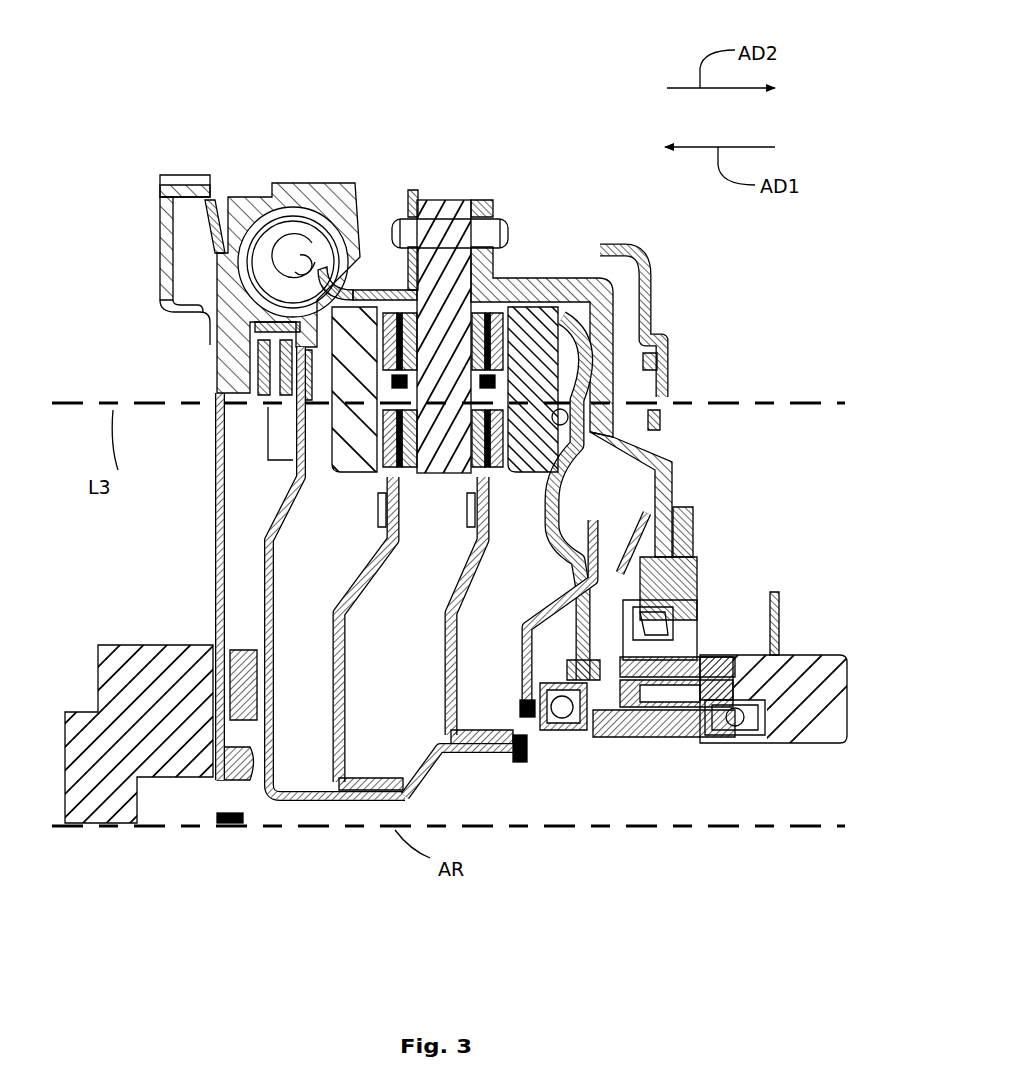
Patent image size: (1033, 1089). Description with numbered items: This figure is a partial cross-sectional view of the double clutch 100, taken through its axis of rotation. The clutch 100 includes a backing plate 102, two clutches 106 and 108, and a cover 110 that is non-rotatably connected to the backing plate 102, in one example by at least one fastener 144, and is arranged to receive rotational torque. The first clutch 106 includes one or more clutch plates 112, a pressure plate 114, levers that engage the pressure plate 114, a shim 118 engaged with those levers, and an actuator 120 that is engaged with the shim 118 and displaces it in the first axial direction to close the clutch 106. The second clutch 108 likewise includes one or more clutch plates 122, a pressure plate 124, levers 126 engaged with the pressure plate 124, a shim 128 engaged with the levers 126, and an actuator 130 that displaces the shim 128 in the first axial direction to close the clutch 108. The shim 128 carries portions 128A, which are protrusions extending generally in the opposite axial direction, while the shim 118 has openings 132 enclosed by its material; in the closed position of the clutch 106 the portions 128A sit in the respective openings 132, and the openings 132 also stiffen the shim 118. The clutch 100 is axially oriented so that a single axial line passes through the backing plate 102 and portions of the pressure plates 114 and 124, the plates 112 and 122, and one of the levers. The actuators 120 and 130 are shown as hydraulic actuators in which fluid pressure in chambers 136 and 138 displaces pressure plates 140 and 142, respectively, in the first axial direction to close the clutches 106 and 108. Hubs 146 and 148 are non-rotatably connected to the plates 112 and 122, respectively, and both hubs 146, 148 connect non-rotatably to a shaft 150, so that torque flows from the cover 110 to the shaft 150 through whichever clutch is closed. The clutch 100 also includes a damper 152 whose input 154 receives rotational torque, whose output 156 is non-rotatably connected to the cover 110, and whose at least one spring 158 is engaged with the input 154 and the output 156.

The double clutch 100 is at (136, 80).
The backing plate 102 is at (453, 200).
The clutch 106 is at (318, 441).
The clutch 108 is at (530, 272).
The cover 110 is at (547, 290).
The clutch plate 112 is at (407, 480).
The pressure plate 114 is at (340, 475).
The shim 118 is at (640, 515).
The actuator 120 is at (607, 700).
The clutch plate 122 is at (503, 482).
The pressure plate 124 is at (547, 330).
The lever 126 is at (657, 458).
The shim 128 is at (520, 662).
The portion 128A is at (693, 582).
The actuator 130 is at (551, 737).
The opening 132 is at (633, 582).
The chamber 136 is at (737, 657).
The chamber 138 is at (690, 720).
The pressure plate 140 is at (695, 683).
The pressure plate 142 is at (677, 727).
The fastener 144 is at (426, 230).
The hub 146 is at (328, 680).
The hub 148 is at (443, 680).
The shaft 150 is at (462, 752).
The damper 152 is at (241, 182).
The input 154 is at (213, 350).
The output 156 is at (375, 228).
The spring 158 is at (312, 187).